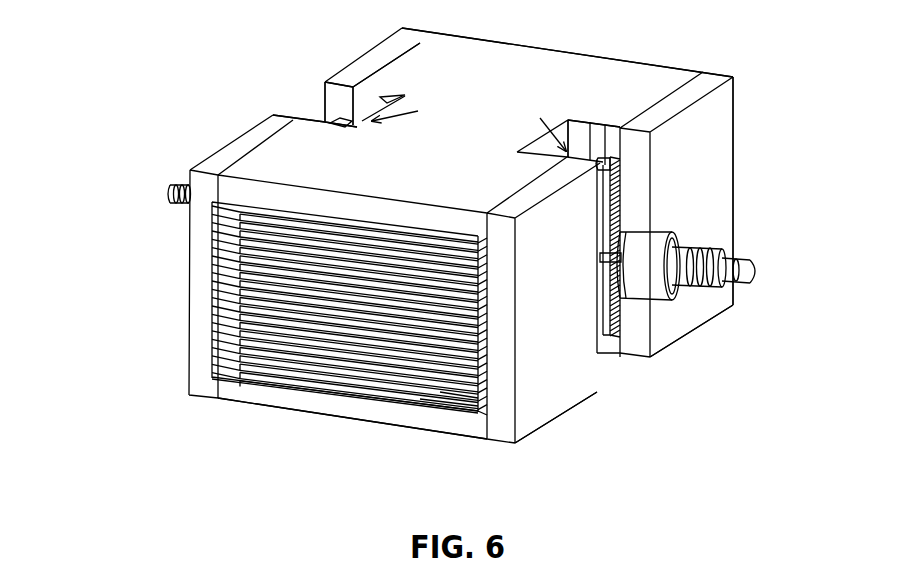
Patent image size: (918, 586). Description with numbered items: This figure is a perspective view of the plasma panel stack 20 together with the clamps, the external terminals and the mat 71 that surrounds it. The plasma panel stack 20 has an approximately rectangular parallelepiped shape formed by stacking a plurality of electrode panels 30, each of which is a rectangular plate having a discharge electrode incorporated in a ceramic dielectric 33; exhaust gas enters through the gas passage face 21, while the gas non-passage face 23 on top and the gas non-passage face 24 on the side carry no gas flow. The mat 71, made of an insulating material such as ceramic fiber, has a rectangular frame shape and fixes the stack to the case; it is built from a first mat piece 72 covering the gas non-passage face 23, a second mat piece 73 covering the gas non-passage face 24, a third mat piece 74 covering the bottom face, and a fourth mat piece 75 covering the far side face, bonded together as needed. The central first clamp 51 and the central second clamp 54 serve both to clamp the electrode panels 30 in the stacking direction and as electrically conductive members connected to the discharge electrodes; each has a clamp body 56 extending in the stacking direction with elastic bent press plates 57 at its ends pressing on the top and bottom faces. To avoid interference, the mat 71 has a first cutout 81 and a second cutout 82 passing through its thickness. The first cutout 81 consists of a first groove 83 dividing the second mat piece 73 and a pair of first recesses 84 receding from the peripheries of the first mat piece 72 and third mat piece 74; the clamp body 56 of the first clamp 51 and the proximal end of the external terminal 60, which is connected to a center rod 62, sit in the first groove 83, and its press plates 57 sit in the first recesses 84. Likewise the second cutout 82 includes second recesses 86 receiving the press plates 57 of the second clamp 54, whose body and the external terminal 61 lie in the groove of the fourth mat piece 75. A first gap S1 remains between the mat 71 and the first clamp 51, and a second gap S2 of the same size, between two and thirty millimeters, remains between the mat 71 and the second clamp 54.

The plasma panel stack 20 is at (212, 303).
The gas passage face 21 is at (332, 393).
The gas non-passage face 23 is at (399, 230).
The gas non-passage face 24 is at (482, 333).
The electrode panel 30 is at (218, 365).
The dielectric 33 is at (468, 393).
The first clamp 51 is at (618, 181).
The second clamp 54 is at (327, 120).
The clamp body 56 is at (600, 348).
The press plate 57 is at (340, 128).
The external terminal 60 is at (757, 272).
The external terminal 61 is at (172, 194).
The center rod 62 is at (607, 262).
The mat 71 is at (655, 62).
The first mat piece 72 is at (537, 58).
The second mat piece 73 is at (726, 172).
The third mat piece 74 is at (377, 414).
The fourth mat piece 75 is at (383, 57).
The first cutout 81 is at (590, 125).
The second cutout 82 is at (367, 96).
The first groove 83 is at (636, 212).
The first recess 84 is at (612, 132).
The second recess 86 is at (388, 99).
The first gap S1 is at (568, 128).
The second gap S2 is at (410, 109).